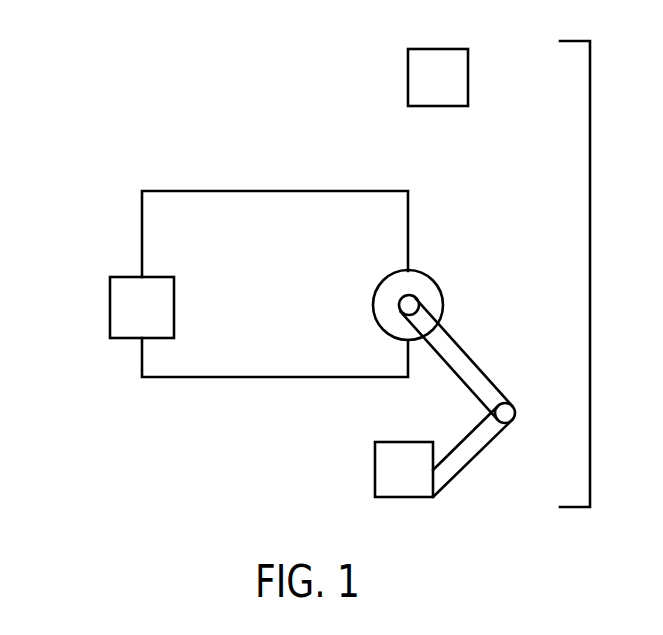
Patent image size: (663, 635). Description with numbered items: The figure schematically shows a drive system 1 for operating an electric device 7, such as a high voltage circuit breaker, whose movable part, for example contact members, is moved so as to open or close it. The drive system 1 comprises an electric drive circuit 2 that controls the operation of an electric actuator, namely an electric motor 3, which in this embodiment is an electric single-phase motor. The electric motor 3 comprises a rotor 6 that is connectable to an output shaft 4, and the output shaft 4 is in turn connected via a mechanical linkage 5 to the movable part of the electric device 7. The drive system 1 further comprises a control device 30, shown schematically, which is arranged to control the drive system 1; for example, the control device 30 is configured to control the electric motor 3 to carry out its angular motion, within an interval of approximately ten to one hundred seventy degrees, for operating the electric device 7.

The drive system 1 is at (154, 104).
The electric drive circuit 2 is at (118, 305).
The electric motor 3 is at (421, 285).
The output shaft 4 is at (487, 385).
The mechanical linkage 5 is at (468, 455).
The rotor 6 is at (410, 311).
The electric device 7 is at (383, 469).
The control device 30 is at (457, 77).